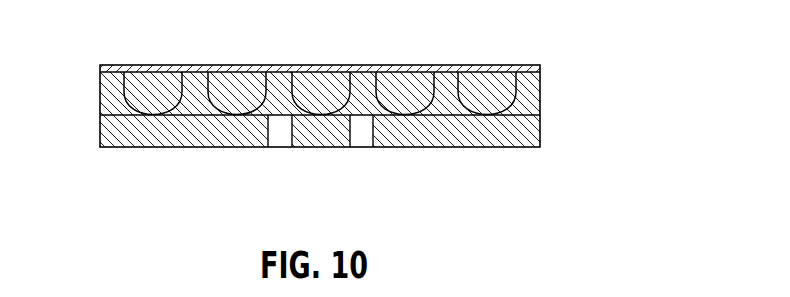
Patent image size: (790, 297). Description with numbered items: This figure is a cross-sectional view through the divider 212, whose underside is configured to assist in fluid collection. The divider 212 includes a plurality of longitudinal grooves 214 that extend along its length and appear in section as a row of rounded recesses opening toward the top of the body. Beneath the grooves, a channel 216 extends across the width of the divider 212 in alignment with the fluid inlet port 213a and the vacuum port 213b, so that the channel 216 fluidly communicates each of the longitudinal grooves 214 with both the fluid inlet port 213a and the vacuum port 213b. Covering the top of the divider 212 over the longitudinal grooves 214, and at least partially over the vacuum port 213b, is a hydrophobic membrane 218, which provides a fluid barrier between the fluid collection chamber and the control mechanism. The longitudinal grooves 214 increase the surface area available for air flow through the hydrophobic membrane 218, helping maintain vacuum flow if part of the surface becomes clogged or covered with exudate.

The divider 212 is at (540, 113).
The fluid inlet port 213a is at (277, 147).
The vacuum port 213b is at (362, 147).
The longitudinal grooves 214 is at (475, 87).
The channel 216 is at (198, 118).
The hydrophobic membrane 218 is at (135, 65).